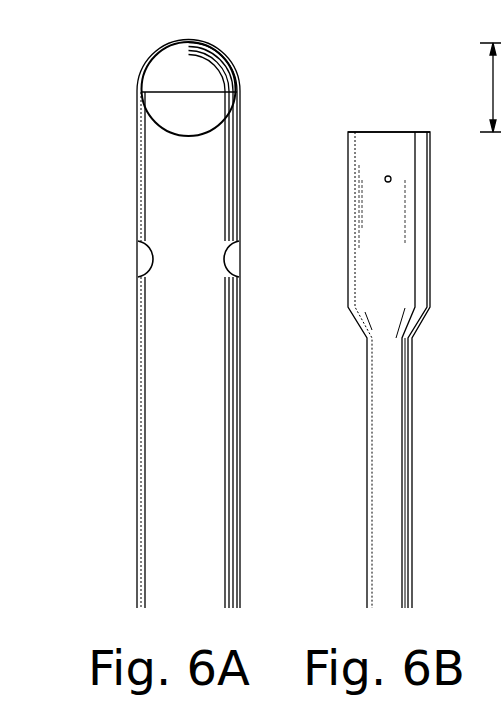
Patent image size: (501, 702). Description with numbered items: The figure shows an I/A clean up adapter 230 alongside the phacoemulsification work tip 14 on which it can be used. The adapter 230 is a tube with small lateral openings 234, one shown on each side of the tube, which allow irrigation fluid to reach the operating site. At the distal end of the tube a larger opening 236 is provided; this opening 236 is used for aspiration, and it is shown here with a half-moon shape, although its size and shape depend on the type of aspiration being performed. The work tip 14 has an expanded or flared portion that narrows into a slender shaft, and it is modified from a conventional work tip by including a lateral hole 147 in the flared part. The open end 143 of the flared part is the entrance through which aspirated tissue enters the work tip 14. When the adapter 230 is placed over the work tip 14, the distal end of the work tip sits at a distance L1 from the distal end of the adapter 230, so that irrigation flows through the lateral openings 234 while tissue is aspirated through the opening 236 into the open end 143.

In FIG. 6B, the phacoemulsification work tip 14 is at (338, 414).
In FIG. 6B, the open end 143 is at (403, 120).
In FIG. 6B, the lateral hole 147 is at (391, 178).
In FIG. 6A, the adapter 230 is at (125, 372).
In FIG. 6B, the adapter 230 is at (500, 440).
In FIG. 6A, the lateral openings 234 is at (140, 260).
In FIG. 6B, the lateral openings 234 is at (500, 235).
In FIG. 6A, the opening 236 is at (163, 120).
In FIG. 6B, the distance L1 is at (490, 87).